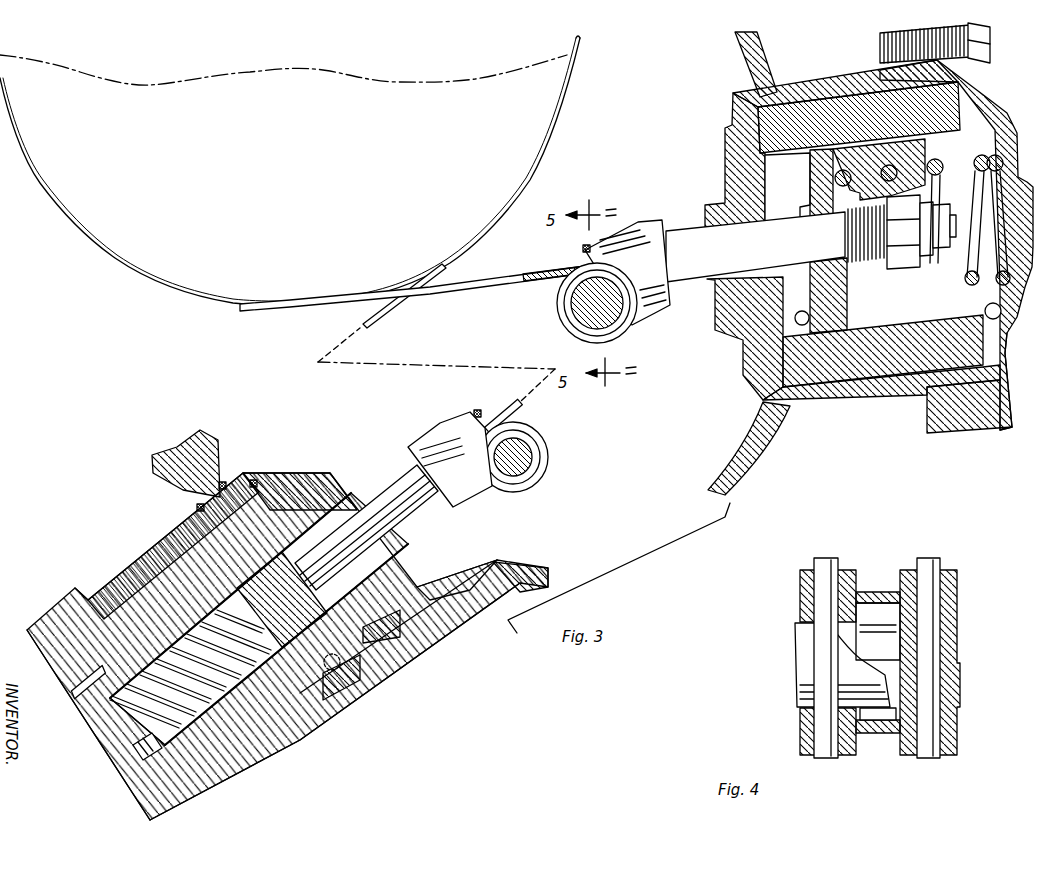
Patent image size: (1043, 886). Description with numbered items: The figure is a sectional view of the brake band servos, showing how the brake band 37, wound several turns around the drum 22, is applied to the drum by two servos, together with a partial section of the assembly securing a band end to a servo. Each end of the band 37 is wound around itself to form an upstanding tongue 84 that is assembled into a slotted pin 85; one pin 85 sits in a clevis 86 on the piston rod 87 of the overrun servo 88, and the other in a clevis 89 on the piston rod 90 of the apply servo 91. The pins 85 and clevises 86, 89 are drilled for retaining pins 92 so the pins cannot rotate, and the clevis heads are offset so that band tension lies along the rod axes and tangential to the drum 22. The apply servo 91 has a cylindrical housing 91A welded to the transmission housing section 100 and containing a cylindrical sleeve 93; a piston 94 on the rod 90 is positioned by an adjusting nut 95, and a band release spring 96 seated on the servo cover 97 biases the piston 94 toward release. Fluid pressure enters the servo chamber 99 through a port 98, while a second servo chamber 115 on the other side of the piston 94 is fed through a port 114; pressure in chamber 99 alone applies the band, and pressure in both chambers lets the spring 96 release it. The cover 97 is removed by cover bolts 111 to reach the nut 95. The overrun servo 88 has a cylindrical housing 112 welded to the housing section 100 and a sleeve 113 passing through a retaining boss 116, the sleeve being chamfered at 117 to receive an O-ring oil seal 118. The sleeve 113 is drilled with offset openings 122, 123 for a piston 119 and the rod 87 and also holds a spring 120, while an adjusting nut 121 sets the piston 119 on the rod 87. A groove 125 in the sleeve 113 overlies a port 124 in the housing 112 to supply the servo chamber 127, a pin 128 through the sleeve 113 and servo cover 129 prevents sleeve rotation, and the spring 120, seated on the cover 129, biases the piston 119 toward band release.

In FIG. 3, the drum 22 is at (401, 276).
In FIG. 3, the brake band 37 is at (443, 290).
In FIG. 4, the brake band 37 is at (885, 738).
In FIG. 3, the tongue 84 is at (576, 302).
In FIG. 4, the tongue 84 is at (882, 627).
In FIG. 3, the slotted pin 85 is at (565, 322).
In FIG. 4, the slotted pin 85 is at (957, 683).
In FIG. 3, the clevis 86 is at (430, 432).
In FIG. 4, the clevis 86 is at (800, 594).
In FIG. 3, the piston rod 87 is at (392, 488).
In FIG. 3, the overrun servo 88 is at (123, 562).
In FIG. 3, the clevis 89 is at (645, 224).
In FIG. 3, the piston rod 90 is at (690, 233).
In FIG. 3, the apply servo 91 is at (866, 394).
In FIG. 3, the cylindrical housing 91A is at (953, 421).
In FIG. 3, the retaining pin 92 is at (586, 250).
In FIG. 4, the retaining pin 92 is at (825, 562).
In FIG. 3, the cylindrical sleeve 93 is at (912, 345).
In FIG. 3, the piston 94 is at (833, 165).
In FIG. 3, the adjusting nut 95 is at (903, 197).
In FIG. 3, the band release spring 96 is at (944, 172).
In FIG. 3, the servo cover 97 is at (995, 108).
In FIG. 3, the port 98 is at (794, 319).
In FIG. 3, the servo chamber 99 is at (780, 178).
In FIG. 3, the transmission housing section 100 is at (750, 60).
In FIG. 3, the cover bolts 111 is at (990, 45).
In FIG. 3, the cylindrical housing 112 is at (165, 540).
In FIG. 3, the sleeve 113 is at (110, 600).
In FIG. 3, the port 114 is at (985, 309).
In FIG. 3, the second servo chamber 115 is at (1008, 327).
In FIG. 3, the retaining boss 116 is at (257, 480).
In FIG. 3, the chamfer 117 is at (280, 480).
In FIG. 3, the O-ring oil seal 118 is at (224, 482).
In FIG. 3, the piston 119 is at (245, 592).
In FIG. 3, the spring 120 is at (136, 769).
In FIG. 3, the adjusting nut 121 is at (268, 698).
In FIG. 3, the drilled opening 122 is at (103, 700).
In FIG. 3, the drilled opening 123 is at (398, 571).
In FIG. 3, the port 124 is at (360, 678).
In FIG. 3, the groove 125 is at (197, 507).
In FIG. 3, the servo chamber 127 is at (358, 611).
In FIG. 3, the pin 128 is at (72, 691).
In FIG. 3, the servo cover 129 is at (95, 728).